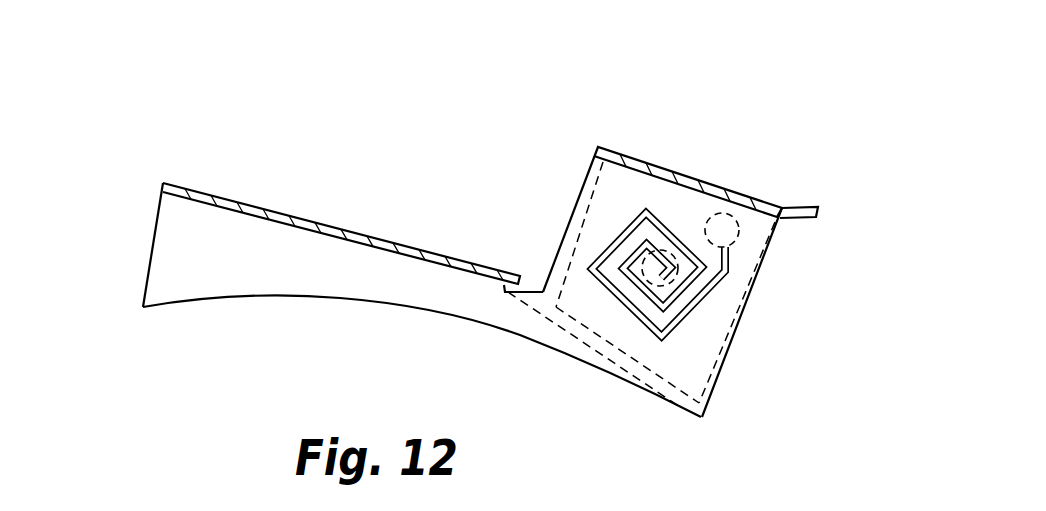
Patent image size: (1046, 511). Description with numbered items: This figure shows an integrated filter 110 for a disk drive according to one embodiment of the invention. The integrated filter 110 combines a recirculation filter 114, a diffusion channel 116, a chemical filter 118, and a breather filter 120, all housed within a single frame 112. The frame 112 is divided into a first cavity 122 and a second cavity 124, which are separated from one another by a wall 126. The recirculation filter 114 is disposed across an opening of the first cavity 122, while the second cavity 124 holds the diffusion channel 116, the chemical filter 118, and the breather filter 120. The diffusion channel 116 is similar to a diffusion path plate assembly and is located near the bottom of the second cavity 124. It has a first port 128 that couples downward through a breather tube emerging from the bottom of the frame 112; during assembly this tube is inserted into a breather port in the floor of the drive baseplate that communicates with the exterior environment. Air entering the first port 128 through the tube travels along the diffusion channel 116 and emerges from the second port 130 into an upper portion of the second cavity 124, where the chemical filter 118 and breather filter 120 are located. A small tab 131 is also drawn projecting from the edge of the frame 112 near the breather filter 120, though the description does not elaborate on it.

The integrated filter 110 is at (228, 108).
The frame 112 is at (155, 230).
The recirculation filter 114 is at (292, 213).
The diffusion channel 116 is at (606, 241).
The chemical filter 118 is at (695, 347).
The breather filter 120 is at (716, 187).
The first cavity 122 is at (378, 285).
The second cavity 124 is at (623, 195).
The wall 126 is at (612, 352).
The first port 128 is at (668, 270).
The second port 130 is at (727, 235).
The tab 131 is at (818, 211).